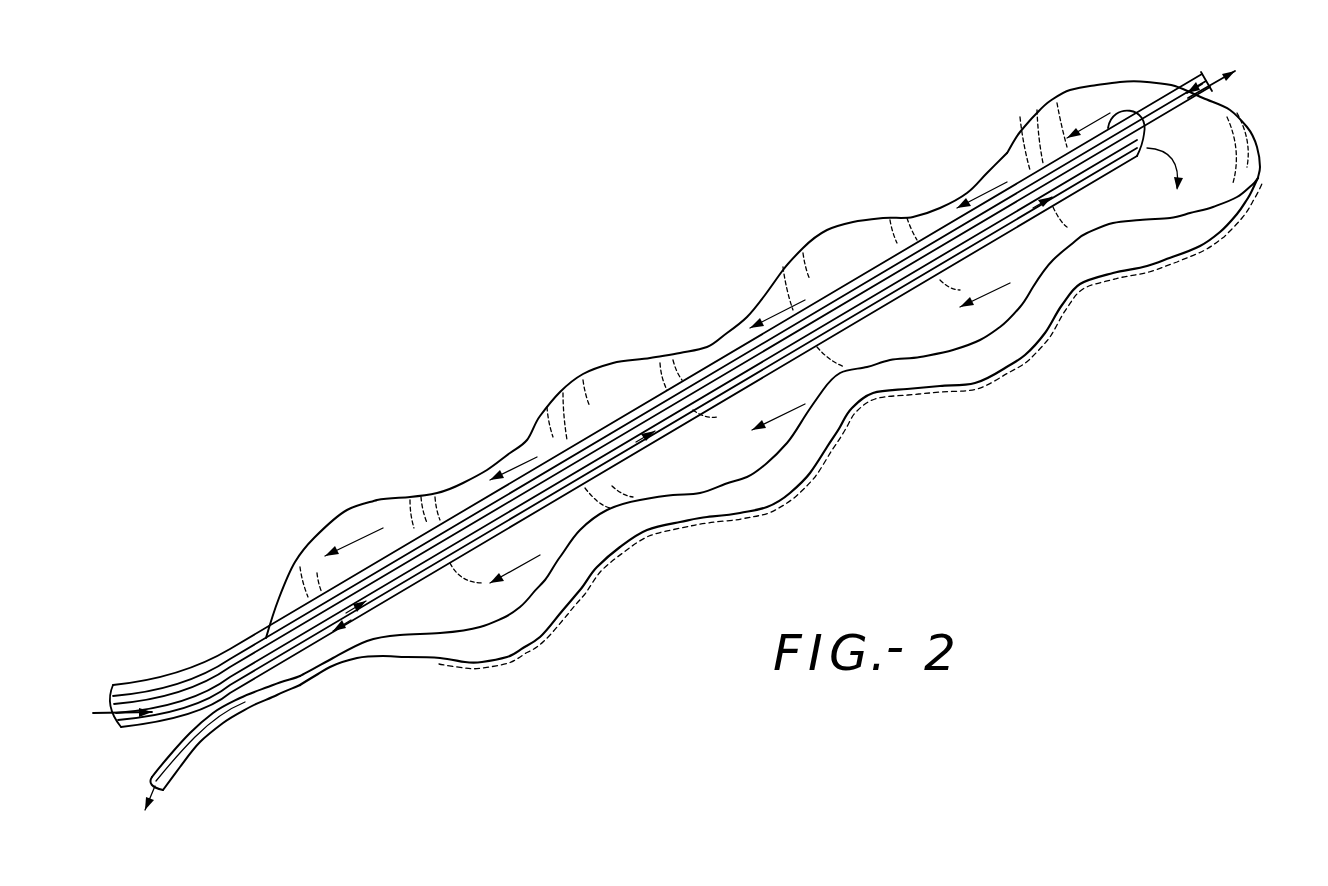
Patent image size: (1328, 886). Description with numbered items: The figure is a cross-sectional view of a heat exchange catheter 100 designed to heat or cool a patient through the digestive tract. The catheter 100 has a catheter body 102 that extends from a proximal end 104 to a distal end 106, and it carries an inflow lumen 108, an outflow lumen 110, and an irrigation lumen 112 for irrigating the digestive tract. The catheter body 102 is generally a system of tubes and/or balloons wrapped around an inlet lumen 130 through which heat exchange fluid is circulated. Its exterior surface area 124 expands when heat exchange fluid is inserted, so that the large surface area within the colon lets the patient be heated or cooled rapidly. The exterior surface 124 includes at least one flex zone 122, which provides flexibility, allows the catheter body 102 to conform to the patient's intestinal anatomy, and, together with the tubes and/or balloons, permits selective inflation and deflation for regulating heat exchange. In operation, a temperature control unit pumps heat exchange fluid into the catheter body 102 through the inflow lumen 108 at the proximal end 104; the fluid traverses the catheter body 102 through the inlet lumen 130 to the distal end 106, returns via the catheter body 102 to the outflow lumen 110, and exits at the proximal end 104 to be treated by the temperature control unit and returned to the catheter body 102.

The heat exchange catheter 100 is at (515, 277).
The catheter body 102 is at (765, 510).
The proximal end 104 is at (263, 702).
The distal end 106 is at (1258, 178).
The inflow lumen 108 is at (131, 725).
The outflow lumen 110 is at (193, 752).
The irrigation lumen 112 is at (1167, 100).
The flex zone 122 is at (1080, 285).
The exterior surface area 124 is at (1007, 370).
The inlet lumen 130 is at (697, 420).